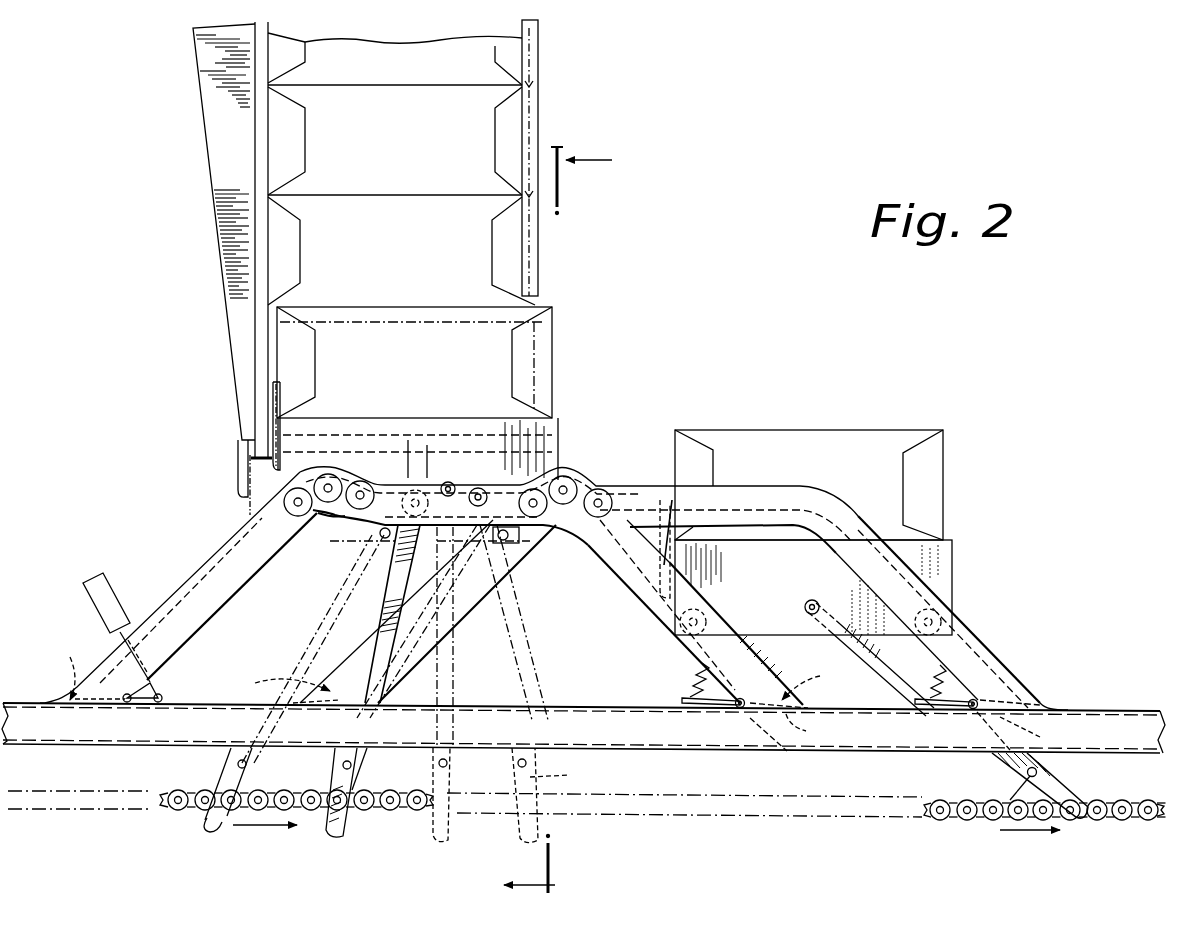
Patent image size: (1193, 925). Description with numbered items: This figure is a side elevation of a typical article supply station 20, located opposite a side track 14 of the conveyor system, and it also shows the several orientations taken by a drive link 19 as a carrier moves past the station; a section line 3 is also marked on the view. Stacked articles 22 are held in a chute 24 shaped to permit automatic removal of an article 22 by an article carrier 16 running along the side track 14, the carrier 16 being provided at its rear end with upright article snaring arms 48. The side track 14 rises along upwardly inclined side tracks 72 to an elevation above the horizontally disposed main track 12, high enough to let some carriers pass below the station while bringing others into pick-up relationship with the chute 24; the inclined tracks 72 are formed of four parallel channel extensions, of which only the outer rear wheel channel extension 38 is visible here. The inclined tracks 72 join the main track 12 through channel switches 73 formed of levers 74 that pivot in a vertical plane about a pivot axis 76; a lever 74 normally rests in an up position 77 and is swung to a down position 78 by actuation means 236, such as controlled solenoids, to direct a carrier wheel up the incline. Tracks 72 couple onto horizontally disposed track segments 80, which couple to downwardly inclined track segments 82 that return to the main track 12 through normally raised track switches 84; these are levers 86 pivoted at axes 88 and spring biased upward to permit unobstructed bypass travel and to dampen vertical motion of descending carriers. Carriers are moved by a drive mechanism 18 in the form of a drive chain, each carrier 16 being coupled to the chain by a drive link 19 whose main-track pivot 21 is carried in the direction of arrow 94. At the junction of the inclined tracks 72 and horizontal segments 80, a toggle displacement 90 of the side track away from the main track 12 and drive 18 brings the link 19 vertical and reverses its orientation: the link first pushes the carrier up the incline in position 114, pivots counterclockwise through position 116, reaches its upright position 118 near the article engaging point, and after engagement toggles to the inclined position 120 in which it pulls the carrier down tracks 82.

The section line 3- 3 is at (558, 519).
The main track 12 is at (36, 700).
The side track 14 is at (608, 466).
The article carrier 16 is at (953, 580).
The drive mechanism 18 is at (696, 816).
The drive link 19 is at (453, 644).
The article supply station 20 is at (558, 207).
The pivot 21 is at (1048, 767).
The article 22 is at (556, 346).
The chute 24 is at (262, 324).
The outer rear wheel channel extension 38 is at (217, 603).
The article snaring arms 48 is at (272, 396).
The upwardly inclined side tracks 72 is at (171, 590).
The channel switches 73 is at (191, 673).
The lever 74 is at (358, 730).
The pivot axis 76 is at (380, 700).
The up position 77 is at (128, 691).
The down position 78 is at (148, 736).
The horizontally disposed track segments 80 is at (635, 486).
The downwardly inclined track segments 82 is at (998, 651).
The track switches 84 is at (1077, 686).
The lever 86 is at (933, 730).
The pivot axis 88 is at (738, 710).
The toggle displacement 90 is at (330, 522).
The arrow 94 is at (261, 827).
The drive link position 114 is at (240, 870).
The drive link position 116 is at (373, 870).
The upright position 118 is at (474, 872).
The inclined position 120 is at (554, 872).
The actuation means 236 is at (92, 605).